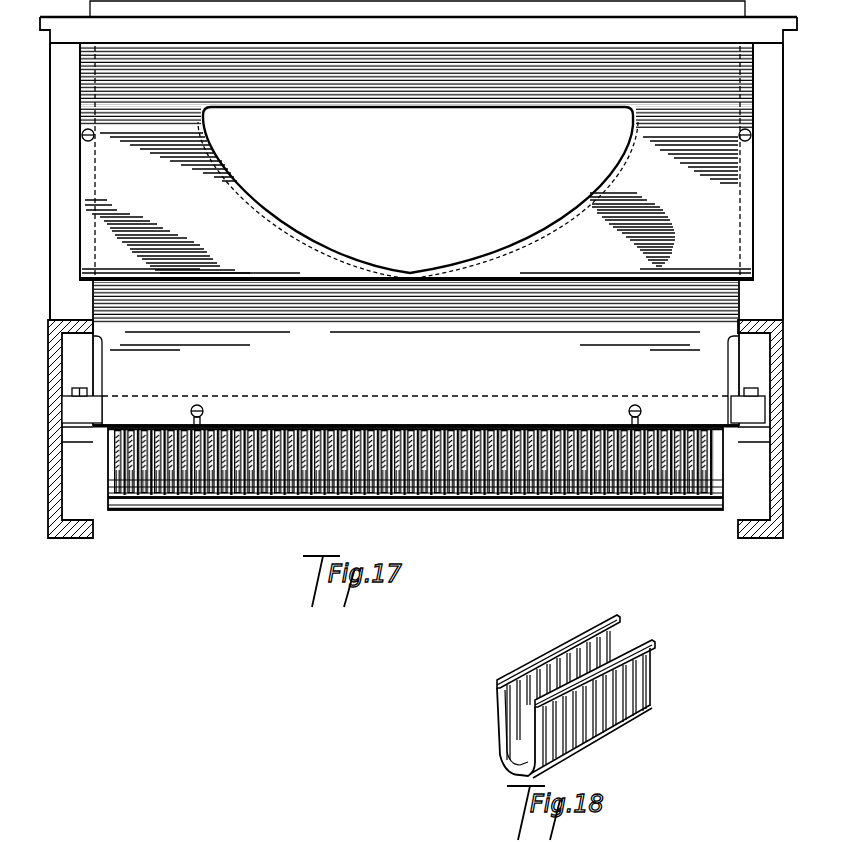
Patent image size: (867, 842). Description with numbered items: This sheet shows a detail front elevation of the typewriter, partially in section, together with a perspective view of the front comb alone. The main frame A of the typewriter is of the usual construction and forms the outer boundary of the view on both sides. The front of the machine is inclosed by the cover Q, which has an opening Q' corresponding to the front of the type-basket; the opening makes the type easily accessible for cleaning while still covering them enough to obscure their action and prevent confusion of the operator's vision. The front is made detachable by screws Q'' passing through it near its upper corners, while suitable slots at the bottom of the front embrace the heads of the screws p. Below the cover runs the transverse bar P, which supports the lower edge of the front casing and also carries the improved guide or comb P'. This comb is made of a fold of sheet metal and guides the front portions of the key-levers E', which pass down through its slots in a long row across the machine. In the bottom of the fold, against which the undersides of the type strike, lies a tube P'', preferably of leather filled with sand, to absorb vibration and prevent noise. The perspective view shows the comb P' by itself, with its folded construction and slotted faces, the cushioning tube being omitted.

In FIG. 17, the main frame A is at (50, 235).
In FIG. 17, the cover Q is at (416, 352).
In FIG. 17, the opening Q' is at (416, 161).
In FIG. 17, the screws Q'' is at (75, 136).
In FIG. 17, the transverse bar P is at (392, 405).
In FIG. 17, the screws p is at (191, 410).
In FIG. 17, the key-levers E' is at (416, 412).
In FIG. 17, the guide or comb P' is at (415, 482).
In FIG. 18, the guide or comb P' is at (576, 696).
In FIG. 17, the tube P'' is at (415, 518).